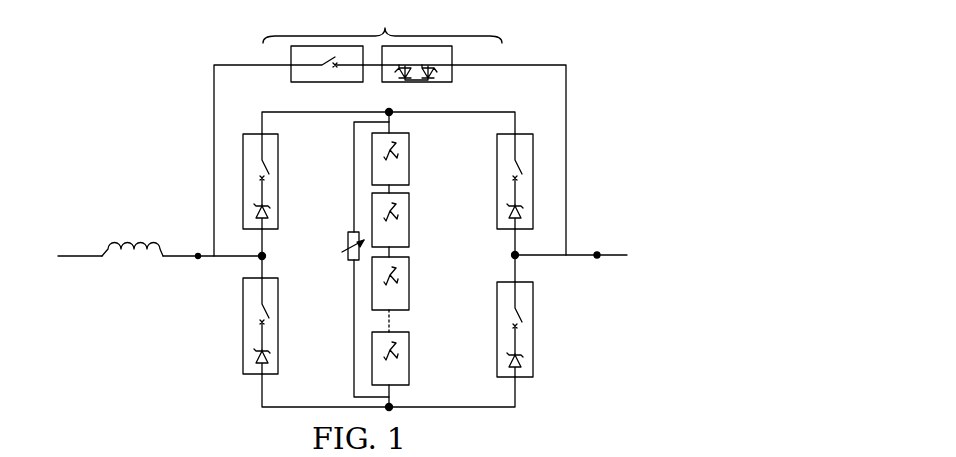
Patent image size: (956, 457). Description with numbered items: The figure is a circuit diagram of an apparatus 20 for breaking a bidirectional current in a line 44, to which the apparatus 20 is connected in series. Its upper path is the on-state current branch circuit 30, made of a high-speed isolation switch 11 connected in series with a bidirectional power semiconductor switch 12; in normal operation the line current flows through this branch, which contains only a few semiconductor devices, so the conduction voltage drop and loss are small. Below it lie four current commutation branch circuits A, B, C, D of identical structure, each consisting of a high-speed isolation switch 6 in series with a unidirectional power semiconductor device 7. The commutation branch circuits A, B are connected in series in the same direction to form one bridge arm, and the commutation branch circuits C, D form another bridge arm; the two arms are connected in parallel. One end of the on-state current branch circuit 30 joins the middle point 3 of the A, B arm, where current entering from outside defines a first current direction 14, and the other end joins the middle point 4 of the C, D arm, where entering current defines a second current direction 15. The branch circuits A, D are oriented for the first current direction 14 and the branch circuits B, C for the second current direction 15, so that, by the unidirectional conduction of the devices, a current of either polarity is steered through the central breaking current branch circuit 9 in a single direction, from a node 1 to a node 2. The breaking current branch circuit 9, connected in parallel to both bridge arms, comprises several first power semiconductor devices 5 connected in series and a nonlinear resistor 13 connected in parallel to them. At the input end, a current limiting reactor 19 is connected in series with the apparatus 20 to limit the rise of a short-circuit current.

The node 1 is at (392, 114).
The node 2 is at (392, 406).
The middle point 3 is at (265, 257).
The middle point 4 is at (518, 256).
The first power semiconductor device 5 is at (409, 159).
The high-speed isolation switch 6 is at (270, 170).
The power semiconductor device 7 is at (268, 212).
The breaking current branch circuit 9 is at (409, 259).
The high-speed isolation switch 11 is at (291, 78).
The bidirectional power semiconductor switch 12 is at (452, 72).
The nonlinear resistor 13 is at (348, 250).
The first current direction 14 is at (182, 256).
The second current direction 15 is at (597, 255).
The current limiting reactor 19 is at (110, 252).
The apparatus 20 is at (580, 62).
The on-state current branch circuit 30 is at (382, 29).
The line 44 is at (76, 256).
The current commutation branch circuit A is at (243, 176).
The current commutation branch circuit B is at (243, 318).
The current commutation branch circuit C is at (497, 183).
The current commutation branch circuit D is at (497, 319).